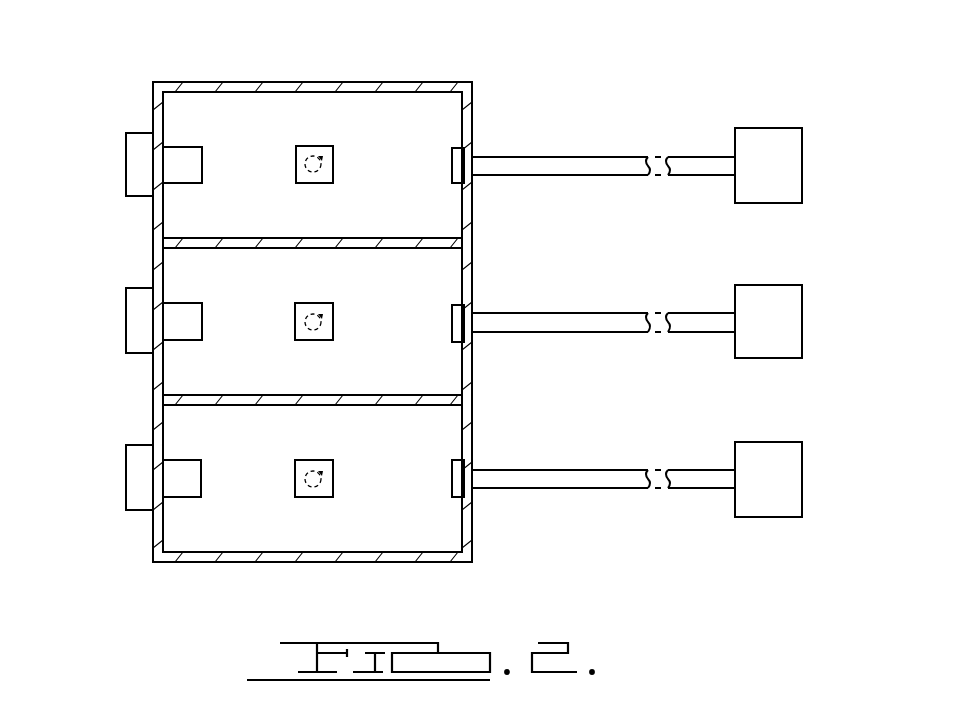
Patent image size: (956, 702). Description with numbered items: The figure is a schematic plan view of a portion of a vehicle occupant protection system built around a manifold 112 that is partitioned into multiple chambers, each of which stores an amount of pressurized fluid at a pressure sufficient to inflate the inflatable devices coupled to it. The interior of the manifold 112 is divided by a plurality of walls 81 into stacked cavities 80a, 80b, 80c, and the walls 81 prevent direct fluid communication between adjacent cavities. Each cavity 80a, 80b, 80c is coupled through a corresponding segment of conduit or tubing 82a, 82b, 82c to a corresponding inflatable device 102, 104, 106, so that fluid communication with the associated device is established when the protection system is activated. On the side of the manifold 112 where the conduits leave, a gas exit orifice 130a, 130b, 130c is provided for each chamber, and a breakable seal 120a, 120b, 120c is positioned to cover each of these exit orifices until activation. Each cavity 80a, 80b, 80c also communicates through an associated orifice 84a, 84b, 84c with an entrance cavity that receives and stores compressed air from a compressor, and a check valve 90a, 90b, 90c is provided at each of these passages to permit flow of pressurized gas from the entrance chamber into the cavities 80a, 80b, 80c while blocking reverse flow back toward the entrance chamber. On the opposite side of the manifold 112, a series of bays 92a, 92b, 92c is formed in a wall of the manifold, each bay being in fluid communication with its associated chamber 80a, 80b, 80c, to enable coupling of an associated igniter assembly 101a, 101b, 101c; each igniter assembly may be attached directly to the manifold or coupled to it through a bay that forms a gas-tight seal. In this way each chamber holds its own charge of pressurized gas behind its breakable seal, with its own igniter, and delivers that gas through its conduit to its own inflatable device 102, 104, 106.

The manifold 112 is at (306, 76).
The walls 81 is at (166, 243).
The cavity 80a is at (266, 526).
The cavity 80b is at (268, 370).
The cavity 80c is at (266, 212).
The bay 92a is at (137, 485).
The bay 92b is at (137, 327).
The bay 92c is at (137, 172).
The igniter assembly 101a is at (192, 477).
The igniter assembly 101b is at (195, 325).
The igniter assembly 101c is at (196, 167).
The orifice 84a is at (333, 460).
The orifice 84b is at (333, 303).
The orifice 84c is at (318, 150).
The check valve 90a is at (333, 497).
The check valve 90b is at (333, 338).
The check valve 90c is at (333, 180).
The breakable seal 120a is at (462, 497).
The breakable seal 120b is at (462, 340).
The breakable seal 120c is at (462, 183).
The gas exit orifice 130a is at (467, 478).
The gas exit orifice 130b is at (467, 320).
The gas exit orifice 130c is at (467, 168).
The conduit 82a is at (625, 482).
The conduit 82b is at (625, 325).
The conduit 82c is at (615, 170).
The inflatable device 102 is at (783, 486).
The inflatable device 104 is at (783, 330).
The inflatable device 106 is at (787, 167).